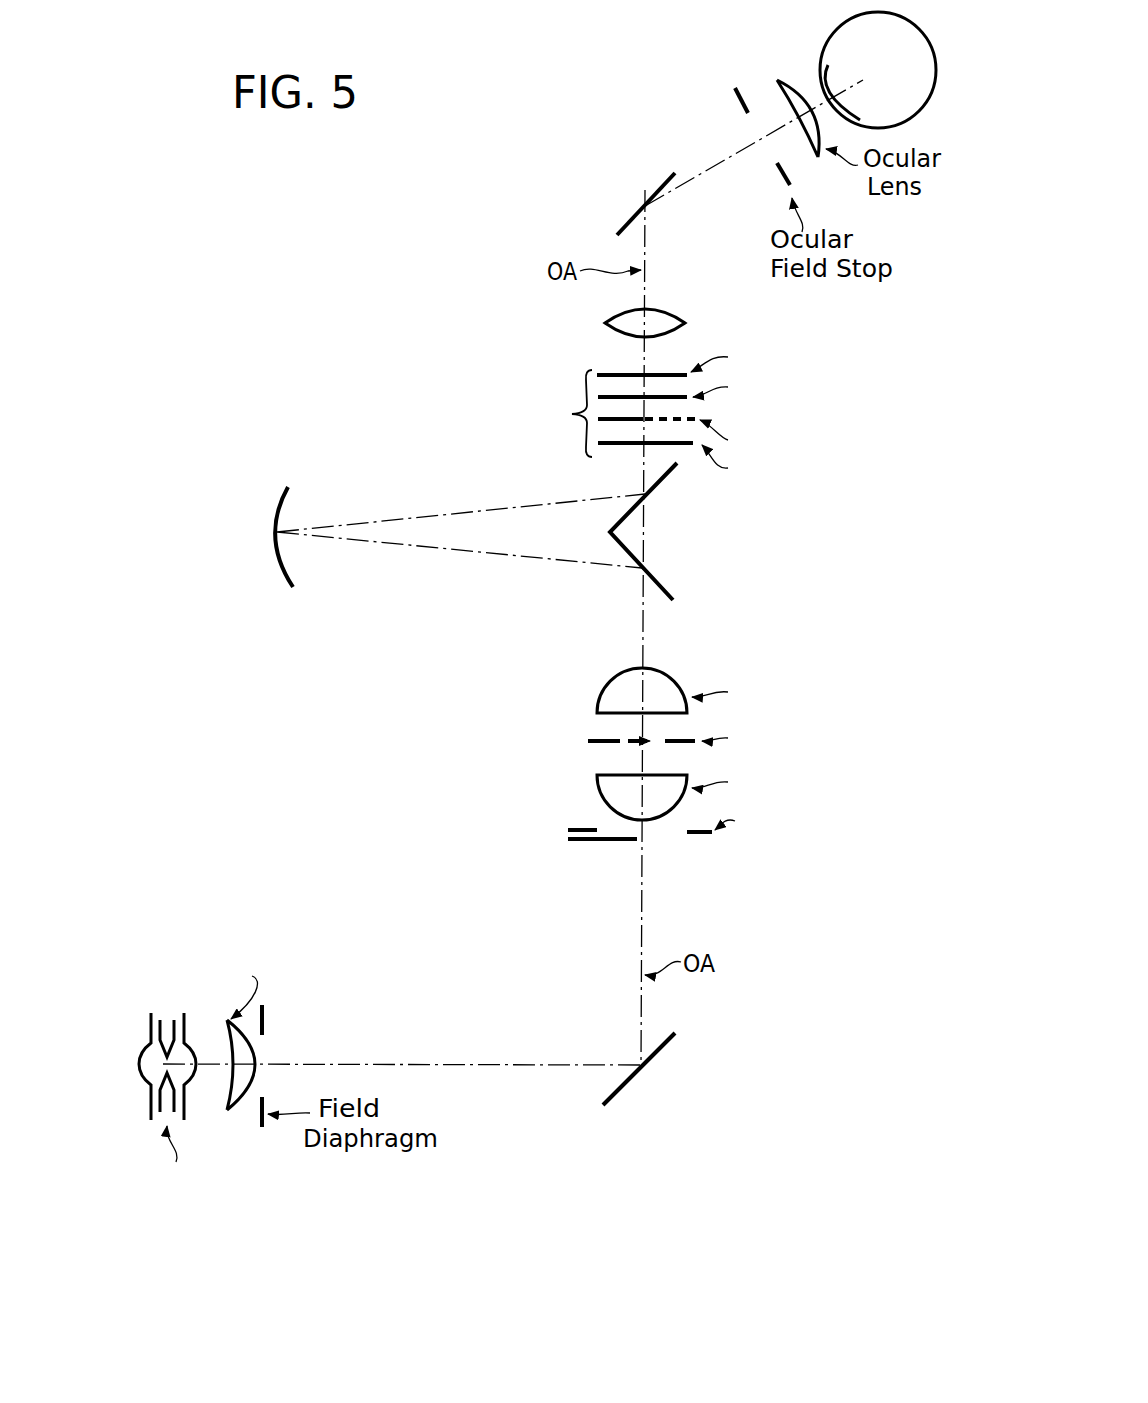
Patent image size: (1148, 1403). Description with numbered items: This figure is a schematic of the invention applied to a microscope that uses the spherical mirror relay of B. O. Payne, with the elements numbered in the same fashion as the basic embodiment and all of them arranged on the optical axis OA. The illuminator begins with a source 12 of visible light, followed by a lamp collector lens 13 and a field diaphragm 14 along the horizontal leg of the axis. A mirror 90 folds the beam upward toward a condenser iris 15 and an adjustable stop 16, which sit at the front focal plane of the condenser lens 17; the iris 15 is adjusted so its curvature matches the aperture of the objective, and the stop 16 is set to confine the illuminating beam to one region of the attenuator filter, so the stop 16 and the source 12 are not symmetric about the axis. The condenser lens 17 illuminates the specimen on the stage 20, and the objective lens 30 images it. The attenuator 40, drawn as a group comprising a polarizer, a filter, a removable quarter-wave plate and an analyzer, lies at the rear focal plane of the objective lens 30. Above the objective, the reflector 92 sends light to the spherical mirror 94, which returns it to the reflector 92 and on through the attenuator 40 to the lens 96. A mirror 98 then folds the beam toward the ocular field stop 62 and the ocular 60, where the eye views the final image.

The source 12 is at (143, 1032).
The lamp collector lens 13 is at (243, 1110).
The field diaphragm 14 is at (266, 1015).
The condenser iris 15 is at (580, 829).
The adjustable stop 16 is at (585, 843).
The condenser lens 17 is at (605, 792).
The stage 20 is at (605, 740).
The objective lens 30 is at (607, 686).
The attenuator 40 is at (563, 428).
The ocular 60 is at (788, 83).
The ocular field stop 62 is at (733, 100).
The mirror 90 is at (622, 1090).
The reflector 92 is at (655, 580).
The spherical mirror 94 is at (272, 554).
The lens 96 is at (672, 308).
The mirror 98 is at (651, 192).